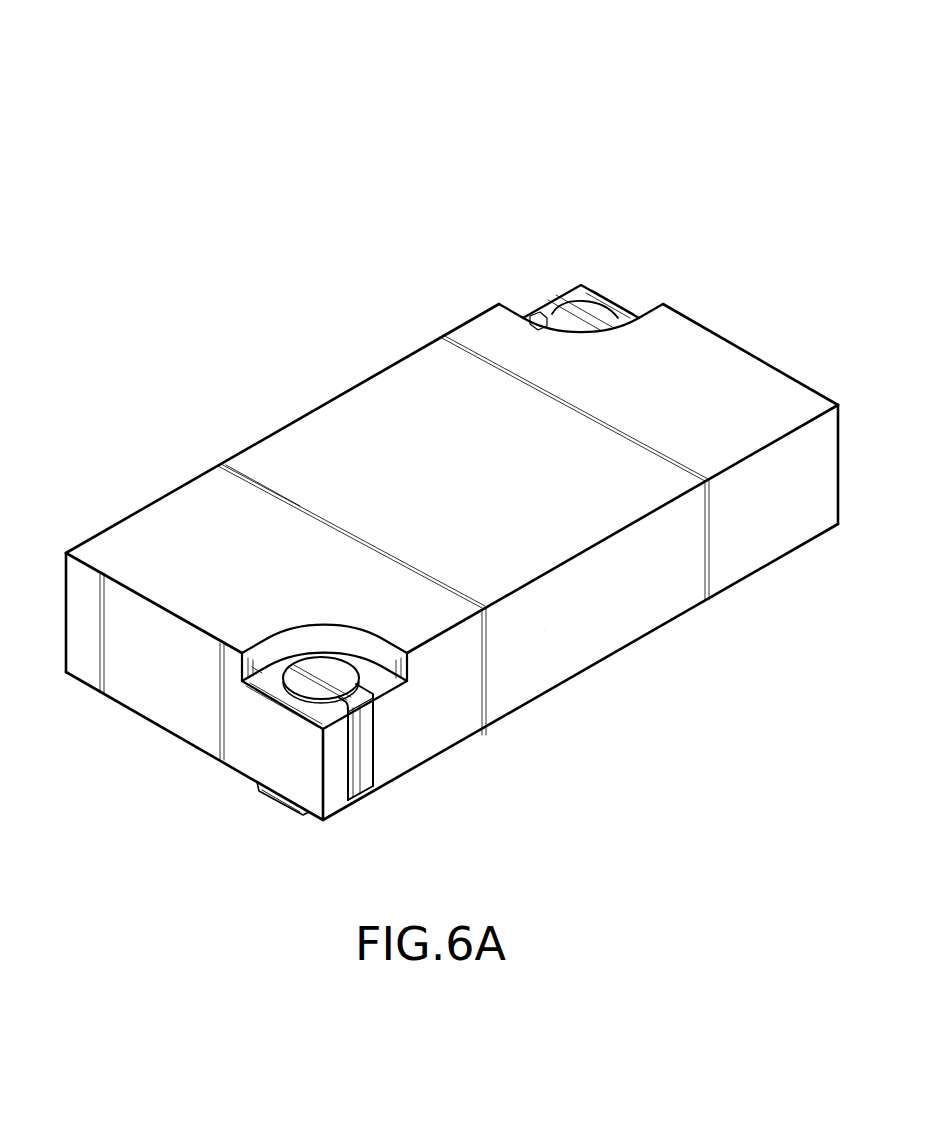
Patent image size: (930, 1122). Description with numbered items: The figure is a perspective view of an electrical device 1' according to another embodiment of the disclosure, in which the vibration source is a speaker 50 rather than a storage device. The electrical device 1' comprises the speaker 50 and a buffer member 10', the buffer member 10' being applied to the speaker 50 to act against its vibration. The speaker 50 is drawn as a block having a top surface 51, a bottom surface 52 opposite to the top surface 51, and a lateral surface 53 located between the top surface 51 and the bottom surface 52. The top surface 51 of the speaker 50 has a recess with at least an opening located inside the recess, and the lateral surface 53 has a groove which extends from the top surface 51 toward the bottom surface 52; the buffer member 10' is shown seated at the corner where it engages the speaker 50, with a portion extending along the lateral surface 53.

The electrical device 1' is at (459, 469).
The buffer member 10' is at (450, 550).
The speaker 50 is at (665, 651).
The top surface 51 is at (733, 375).
The bottom surface 52 is at (743, 582).
The lateral surface 53 is at (545, 630).